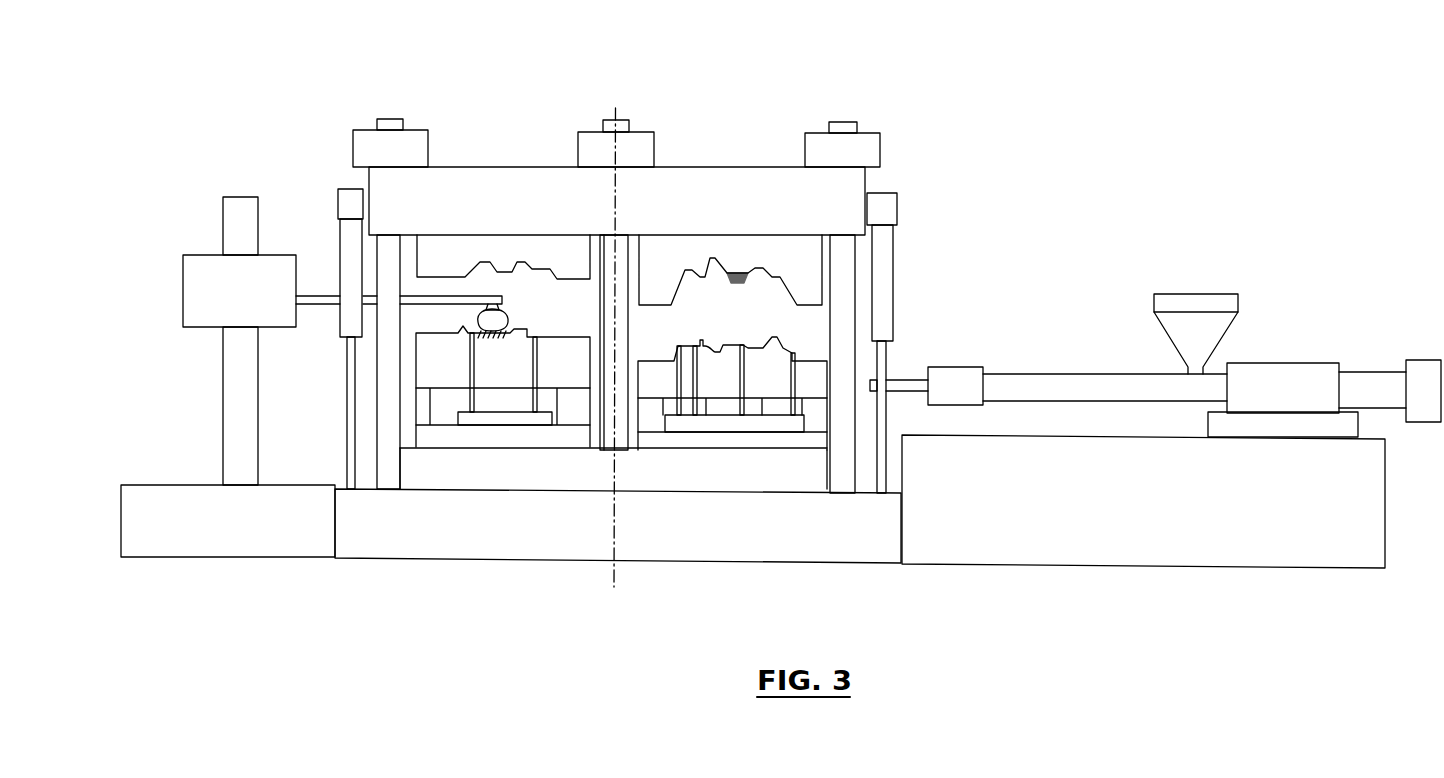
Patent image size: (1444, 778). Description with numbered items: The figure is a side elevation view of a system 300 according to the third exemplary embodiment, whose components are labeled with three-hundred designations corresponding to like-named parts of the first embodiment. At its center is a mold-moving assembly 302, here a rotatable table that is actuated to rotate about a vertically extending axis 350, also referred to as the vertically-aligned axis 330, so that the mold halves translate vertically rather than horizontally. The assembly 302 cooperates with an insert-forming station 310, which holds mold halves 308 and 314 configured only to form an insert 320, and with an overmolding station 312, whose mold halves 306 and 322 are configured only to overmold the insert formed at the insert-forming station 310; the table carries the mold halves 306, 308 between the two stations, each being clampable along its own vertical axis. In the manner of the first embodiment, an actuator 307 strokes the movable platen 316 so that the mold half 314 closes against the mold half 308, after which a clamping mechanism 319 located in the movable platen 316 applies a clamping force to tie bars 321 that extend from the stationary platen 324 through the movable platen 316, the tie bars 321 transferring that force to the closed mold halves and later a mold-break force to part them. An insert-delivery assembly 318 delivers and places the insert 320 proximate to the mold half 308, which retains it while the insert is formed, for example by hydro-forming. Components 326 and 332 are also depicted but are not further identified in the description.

The system 300 is at (1180, 168).
The mold-moving assembly 302 is at (665, 465).
The mold half 306 is at (760, 380).
The actuator 307 is at (350, 237).
The mold half 308 is at (517, 370).
The insert-forming station 310 is at (518, 143).
The overmolding station 312 is at (741, 142).
The mold half 314 is at (546, 247).
The movable platen 316 is at (448, 185).
The insert-delivery assembly 318 is at (202, 267).
The clamping mechanism 319 is at (365, 160).
The insert 320 is at (480, 320).
The tie bars 321 is at (387, 275).
The mold half 322 is at (775, 248).
The stationary platen 324 is at (863, 542).
The injection unit base 326 is at (1187, 540).
The vertically-aligned axis 330 is at (470, 373).
The ejector plate 332 is at (493, 417).
The axis 350 is at (610, 572).